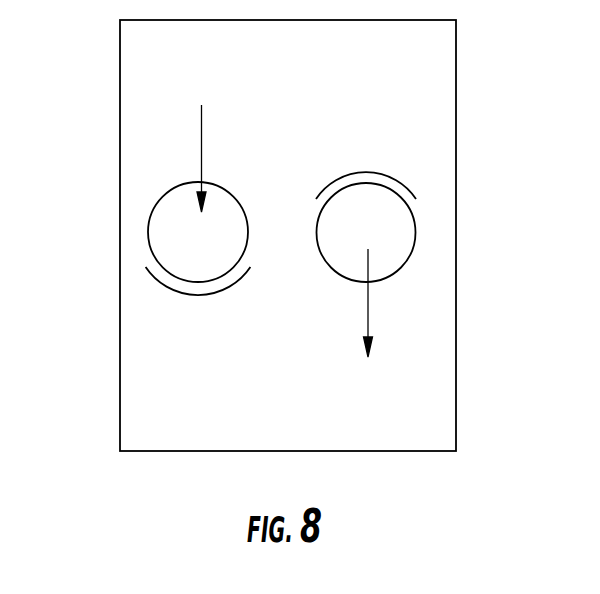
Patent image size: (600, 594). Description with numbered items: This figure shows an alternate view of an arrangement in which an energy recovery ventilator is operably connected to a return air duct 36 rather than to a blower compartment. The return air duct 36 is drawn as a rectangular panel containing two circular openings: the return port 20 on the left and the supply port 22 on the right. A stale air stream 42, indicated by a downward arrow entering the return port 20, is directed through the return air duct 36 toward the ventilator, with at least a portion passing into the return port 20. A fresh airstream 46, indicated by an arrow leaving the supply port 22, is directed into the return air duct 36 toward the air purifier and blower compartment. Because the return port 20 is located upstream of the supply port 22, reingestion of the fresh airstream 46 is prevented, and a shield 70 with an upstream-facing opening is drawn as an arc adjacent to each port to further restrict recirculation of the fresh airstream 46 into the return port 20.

The return air duct 36 is at (145, 98).
The return port 20 is at (148, 238).
The supply port 22 is at (411, 212).
The shield 70 is at (180, 293).
The stale air stream 42 is at (202, 160).
The fresh airstream 46 is at (368, 292).